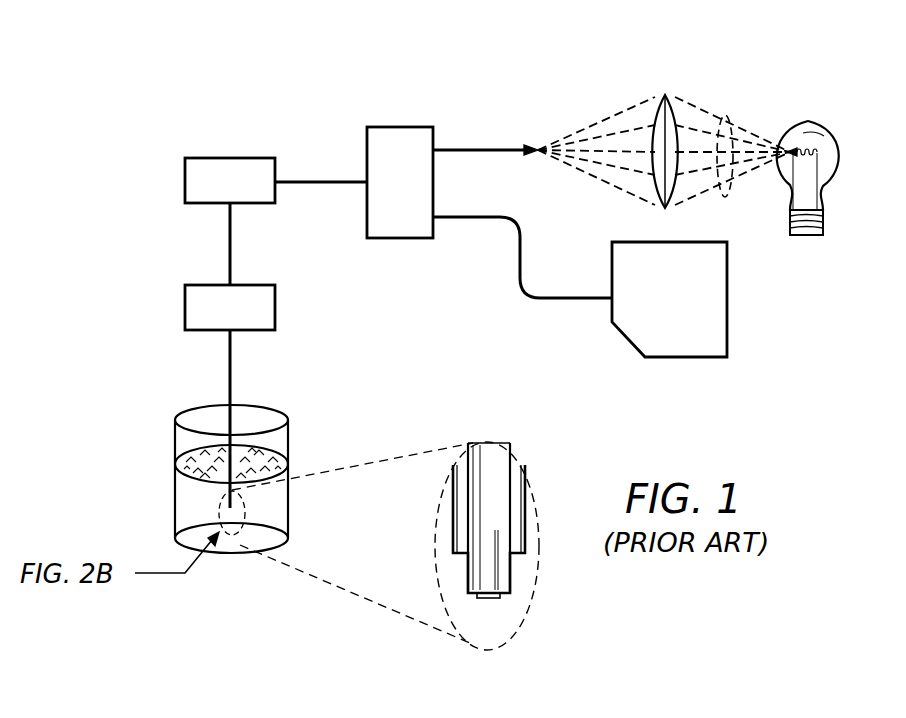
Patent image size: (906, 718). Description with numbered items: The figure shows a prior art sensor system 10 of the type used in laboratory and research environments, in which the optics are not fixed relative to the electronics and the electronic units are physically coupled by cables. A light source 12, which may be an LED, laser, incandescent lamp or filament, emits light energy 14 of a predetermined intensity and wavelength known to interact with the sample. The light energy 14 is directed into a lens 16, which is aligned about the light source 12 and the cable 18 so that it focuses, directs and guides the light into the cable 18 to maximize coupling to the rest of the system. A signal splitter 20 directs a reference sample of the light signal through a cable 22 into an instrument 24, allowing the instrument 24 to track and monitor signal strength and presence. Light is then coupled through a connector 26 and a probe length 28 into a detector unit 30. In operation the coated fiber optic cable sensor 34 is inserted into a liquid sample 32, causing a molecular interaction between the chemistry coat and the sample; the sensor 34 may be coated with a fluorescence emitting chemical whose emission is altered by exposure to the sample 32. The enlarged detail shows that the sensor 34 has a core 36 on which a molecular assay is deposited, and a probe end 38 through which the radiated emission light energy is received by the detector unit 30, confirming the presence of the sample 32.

The sensor system 10 is at (338, 72).
The light source 12 is at (812, 121).
The light energy 14 is at (725, 115).
The lens 16 is at (664, 95).
The cable 18 is at (520, 146).
The signal splitter 20 is at (386, 197).
The cable 22 is at (518, 270).
The instrument 24 is at (654, 312).
The connector 26 is at (185, 178).
The probe length 28 is at (230, 258).
The detector unit 30 is at (276, 312).
The sample 32 is at (175, 500).
The coated fiber optic cable sensor 34 is at (228, 540).
The core 36 is at (490, 445).
The probe end 38 is at (487, 600).